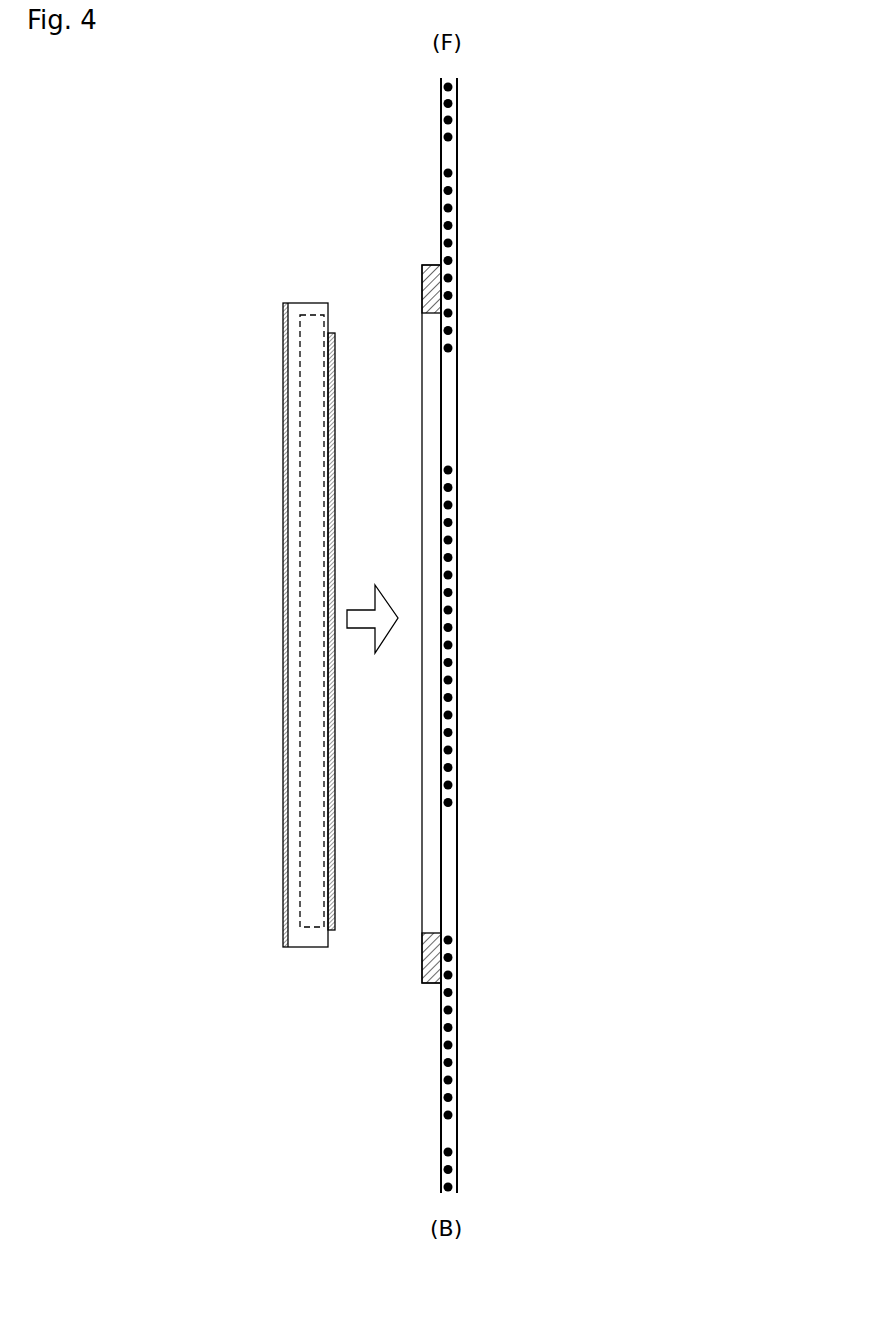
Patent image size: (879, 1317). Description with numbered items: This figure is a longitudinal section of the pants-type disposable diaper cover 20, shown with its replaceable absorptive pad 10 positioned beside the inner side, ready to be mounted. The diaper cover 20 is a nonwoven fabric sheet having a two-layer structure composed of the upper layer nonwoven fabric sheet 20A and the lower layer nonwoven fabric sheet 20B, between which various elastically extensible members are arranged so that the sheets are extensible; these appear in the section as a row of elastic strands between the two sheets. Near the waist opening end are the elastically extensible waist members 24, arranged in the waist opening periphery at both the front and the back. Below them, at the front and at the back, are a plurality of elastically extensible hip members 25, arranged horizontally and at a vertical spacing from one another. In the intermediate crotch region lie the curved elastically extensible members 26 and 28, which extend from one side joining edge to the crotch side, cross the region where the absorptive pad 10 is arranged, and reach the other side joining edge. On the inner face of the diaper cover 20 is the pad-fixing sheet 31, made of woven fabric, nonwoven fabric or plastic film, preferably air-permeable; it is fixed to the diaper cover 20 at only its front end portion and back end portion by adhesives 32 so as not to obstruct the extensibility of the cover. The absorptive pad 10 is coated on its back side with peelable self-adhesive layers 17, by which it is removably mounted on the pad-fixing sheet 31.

The absorptive pad 10 is at (281, 555).
The peelable self-adhesive layers 17 is at (336, 470).
The diaper cover 20 is at (469, 131).
The upper layer nonwoven fabric sheet 20A is at (441, 155).
The lower layer nonwoven fabric sheet 20B is at (457, 153).
The elastically extensible waist members 24 is at (443, 87).
The elastically extensible hip members 25 is at (453, 225).
The curved elastically extensible member 26 is at (453, 714).
The curved elastically extensible member 28 is at (453, 487).
The pad-fixing sheet 31 is at (422, 410).
The adhesives 32 is at (422, 287).